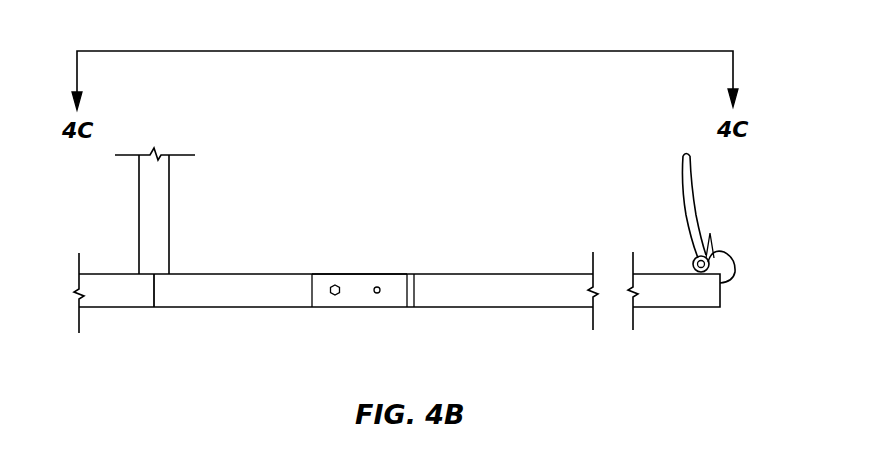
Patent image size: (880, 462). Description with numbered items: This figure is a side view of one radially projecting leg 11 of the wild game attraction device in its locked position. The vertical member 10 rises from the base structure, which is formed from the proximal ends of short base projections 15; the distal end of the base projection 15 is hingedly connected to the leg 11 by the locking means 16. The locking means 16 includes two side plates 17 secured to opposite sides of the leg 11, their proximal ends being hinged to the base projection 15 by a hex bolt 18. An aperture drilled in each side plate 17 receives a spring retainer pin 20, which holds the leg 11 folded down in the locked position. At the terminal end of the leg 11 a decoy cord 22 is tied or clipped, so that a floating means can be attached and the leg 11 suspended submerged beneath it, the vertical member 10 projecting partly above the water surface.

The vertical member 10 is at (139, 217).
The leg 11 is at (522, 274).
The base projection 15 is at (268, 308).
The locking means 16 is at (347, 268).
The side plate 17 is at (353, 282).
The hex bolt 18 is at (335, 296).
The spring retainer pin 20 is at (377, 296).
The decoy cord 22 is at (677, 178).